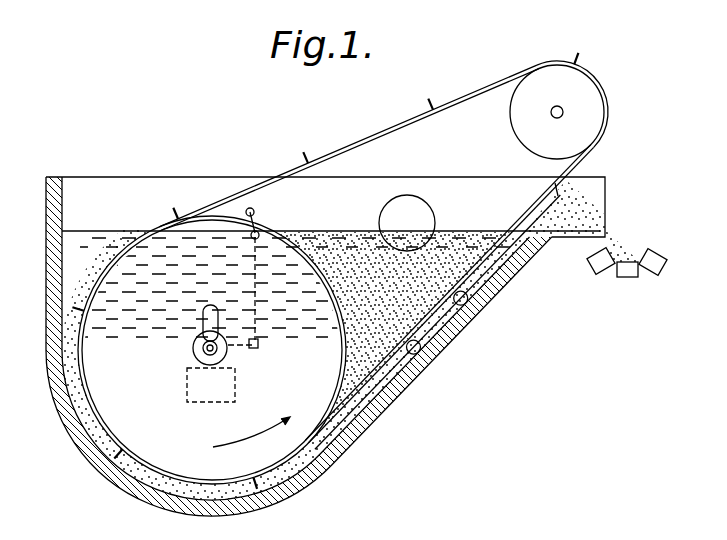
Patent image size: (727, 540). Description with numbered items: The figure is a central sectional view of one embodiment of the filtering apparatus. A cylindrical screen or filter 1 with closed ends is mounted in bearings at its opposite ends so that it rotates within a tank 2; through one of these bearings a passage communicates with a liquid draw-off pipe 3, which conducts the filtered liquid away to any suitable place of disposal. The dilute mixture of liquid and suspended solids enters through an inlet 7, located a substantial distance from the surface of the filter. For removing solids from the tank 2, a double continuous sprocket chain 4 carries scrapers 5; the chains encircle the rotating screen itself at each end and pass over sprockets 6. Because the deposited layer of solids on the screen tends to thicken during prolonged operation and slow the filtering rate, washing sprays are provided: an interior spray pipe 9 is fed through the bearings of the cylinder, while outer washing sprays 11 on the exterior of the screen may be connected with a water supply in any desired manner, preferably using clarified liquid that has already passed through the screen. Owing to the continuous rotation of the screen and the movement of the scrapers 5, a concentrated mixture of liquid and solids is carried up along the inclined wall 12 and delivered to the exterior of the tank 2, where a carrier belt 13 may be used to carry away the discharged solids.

The cylindrical screen or filter 1 is at (338, 338).
The tank 2 is at (176, 177).
The liquid draw-off pipe 3 is at (202, 316).
The double continuous sprocket chain 4 is at (410, 118).
The scrapers 5 is at (466, 305).
The sprockets 6 is at (513, 116).
The inlet 7 is at (433, 218).
The interior spray pipe 9 is at (260, 321).
The outer washing sprays 11 is at (256, 210).
The inclined wall 12 is at (424, 353).
The carrier belt 13 is at (652, 262).